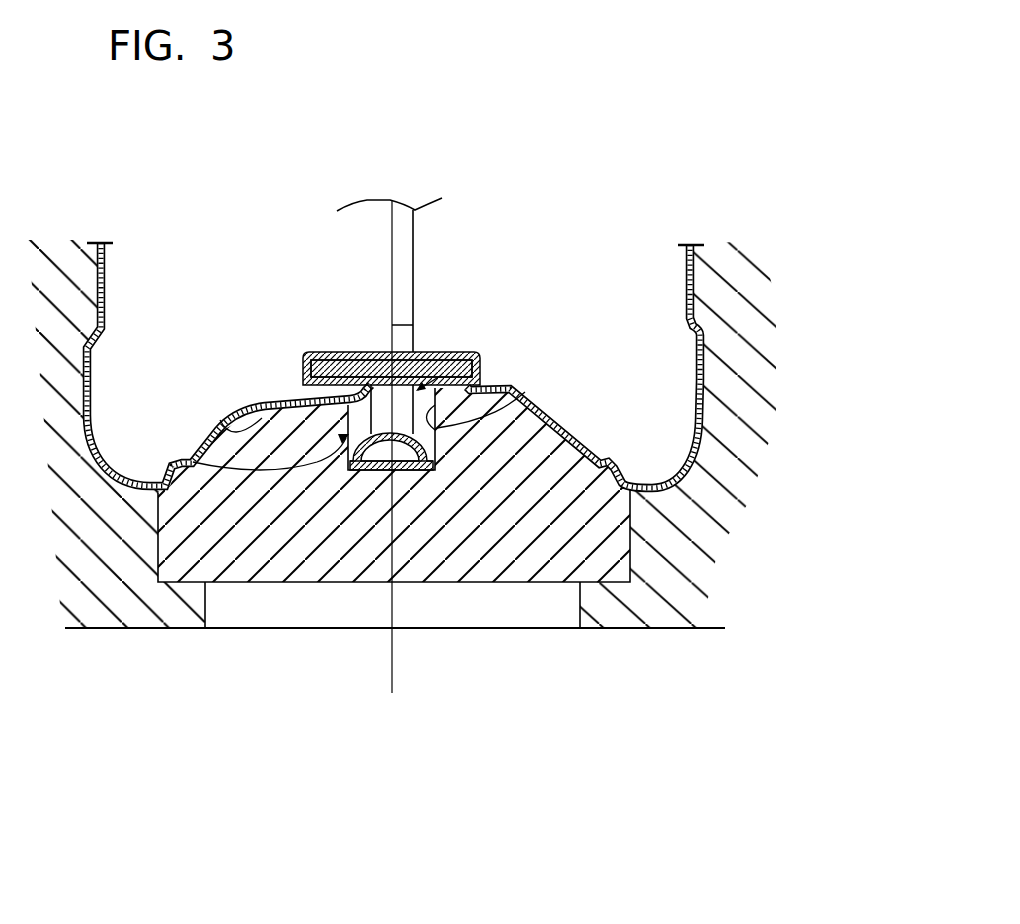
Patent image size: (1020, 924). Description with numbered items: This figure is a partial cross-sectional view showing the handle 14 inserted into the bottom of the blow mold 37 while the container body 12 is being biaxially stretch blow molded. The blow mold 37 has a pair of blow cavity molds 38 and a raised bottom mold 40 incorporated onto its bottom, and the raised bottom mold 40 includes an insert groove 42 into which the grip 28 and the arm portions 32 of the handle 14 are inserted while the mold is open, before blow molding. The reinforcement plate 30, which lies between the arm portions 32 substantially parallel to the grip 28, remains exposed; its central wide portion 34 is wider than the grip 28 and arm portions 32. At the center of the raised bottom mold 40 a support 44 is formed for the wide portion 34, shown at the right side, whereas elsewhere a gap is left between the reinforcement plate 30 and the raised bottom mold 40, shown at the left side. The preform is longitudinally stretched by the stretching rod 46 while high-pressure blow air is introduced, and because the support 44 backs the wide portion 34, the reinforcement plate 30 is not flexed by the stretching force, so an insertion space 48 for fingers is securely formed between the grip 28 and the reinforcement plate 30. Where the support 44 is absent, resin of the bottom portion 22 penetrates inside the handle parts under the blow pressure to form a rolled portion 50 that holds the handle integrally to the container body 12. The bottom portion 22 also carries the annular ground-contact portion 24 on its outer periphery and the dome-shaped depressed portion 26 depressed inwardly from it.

The container body 12 is at (697, 307).
The handle 14 is at (443, 352).
The bottom portion 22 is at (609, 449).
The annular ground-contact portion 24 is at (645, 517).
The depressed portion 26 is at (220, 418).
The grip 28 is at (287, 583).
The reinforcement plate 30 is at (413, 347).
The arm portions 32 is at (385, 407).
The wide portion 34 is at (330, 352).
The blow mold 37 is at (170, 648).
The blow cavity molds 38 is at (112, 590).
The raised bottom mold 40 is at (447, 542).
The insert groove 42 is at (525, 392).
The support 44 is at (487, 383).
The stretching rod 46 is at (407, 237).
The insertion space 48 is at (193, 458).
The rolled portion 50 is at (358, 352).